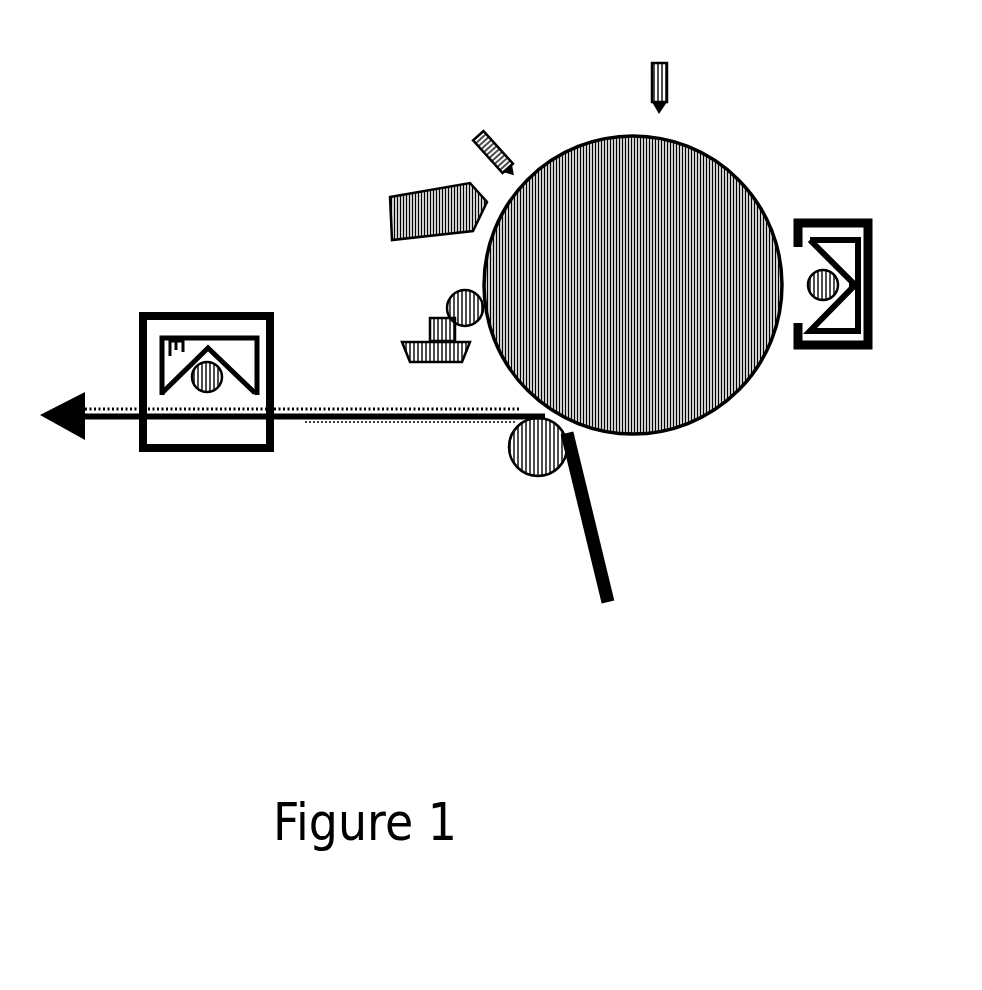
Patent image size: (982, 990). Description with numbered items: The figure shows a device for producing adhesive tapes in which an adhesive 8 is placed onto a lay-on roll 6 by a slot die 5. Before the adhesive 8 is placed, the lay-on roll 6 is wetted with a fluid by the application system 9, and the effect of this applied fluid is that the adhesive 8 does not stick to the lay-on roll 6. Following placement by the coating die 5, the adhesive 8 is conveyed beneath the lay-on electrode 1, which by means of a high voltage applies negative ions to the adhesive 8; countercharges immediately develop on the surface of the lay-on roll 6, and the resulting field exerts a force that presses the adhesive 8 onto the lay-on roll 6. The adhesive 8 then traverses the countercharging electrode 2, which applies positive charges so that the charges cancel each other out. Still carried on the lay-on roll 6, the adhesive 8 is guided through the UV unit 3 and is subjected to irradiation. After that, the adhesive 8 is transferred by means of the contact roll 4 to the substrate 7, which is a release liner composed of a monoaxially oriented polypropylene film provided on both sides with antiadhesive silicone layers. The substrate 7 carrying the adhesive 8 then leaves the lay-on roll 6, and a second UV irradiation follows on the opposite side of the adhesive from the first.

The lay-on electrode 1 is at (203, 309).
The countercharging electrode 2 is at (625, 51).
The UV unit 3 is at (842, 228).
The contact roll 4 is at (502, 461).
The slot die 5 is at (388, 187).
The lay-on roll 6 is at (681, 155).
The substrate 7 is at (615, 558).
The adhesive 8 is at (312, 396).
The application system 9 is at (414, 308).